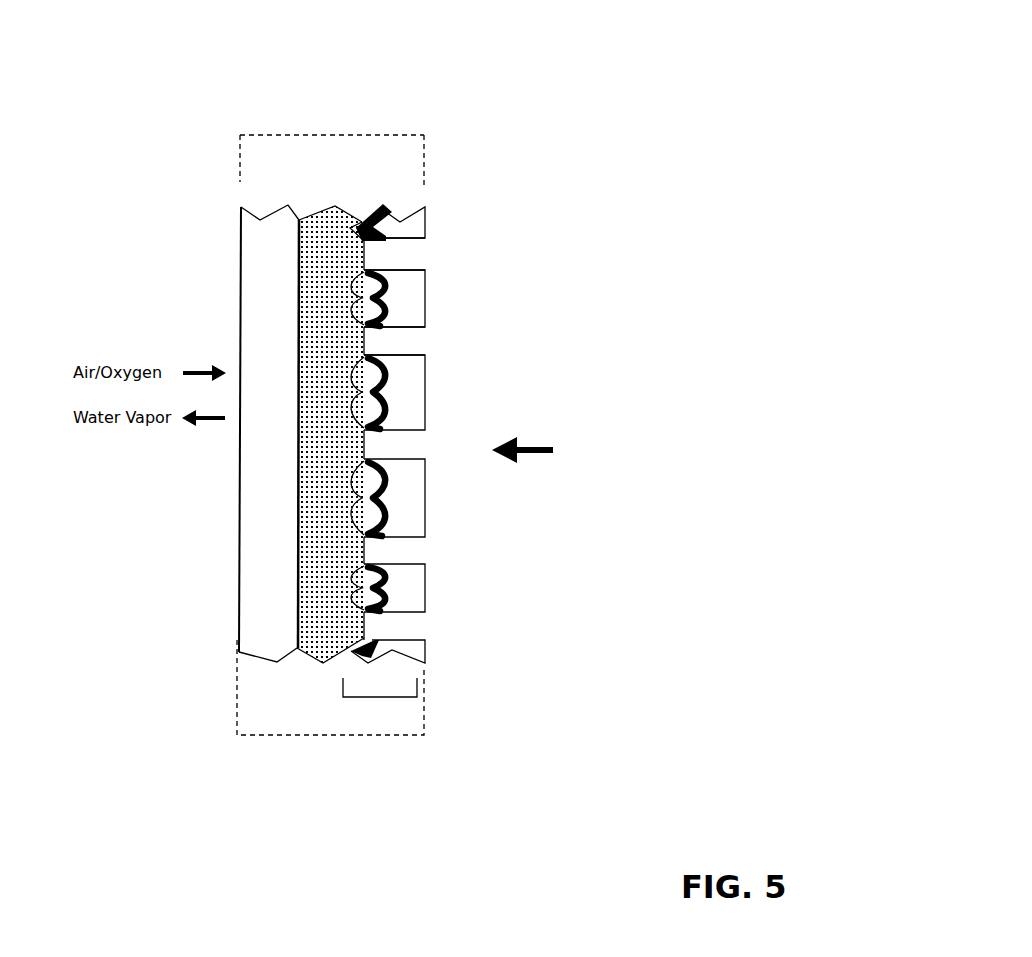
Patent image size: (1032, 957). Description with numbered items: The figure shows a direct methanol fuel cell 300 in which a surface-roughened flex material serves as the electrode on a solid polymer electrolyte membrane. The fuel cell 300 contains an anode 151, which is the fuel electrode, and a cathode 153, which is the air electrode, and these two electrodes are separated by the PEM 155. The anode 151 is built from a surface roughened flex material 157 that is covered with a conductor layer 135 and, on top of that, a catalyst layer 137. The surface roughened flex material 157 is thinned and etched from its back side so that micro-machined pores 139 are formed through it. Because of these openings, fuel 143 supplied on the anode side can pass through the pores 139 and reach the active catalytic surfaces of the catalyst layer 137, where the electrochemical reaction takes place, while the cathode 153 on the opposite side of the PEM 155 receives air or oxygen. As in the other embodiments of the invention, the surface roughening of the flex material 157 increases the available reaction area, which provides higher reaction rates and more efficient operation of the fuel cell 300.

The fuel cell 300 is at (693, 26).
The cathode 153 is at (267, 228).
The PEM 155 is at (320, 218).
The catalyst layer 137 is at (365, 215).
The conductor layer 135 is at (386, 207).
The surface roughened flex material 157 is at (425, 502).
The micro-machined pores 139 is at (393, 250).
The fuel 143 is at (568, 450).
The anode 151 is at (372, 697).